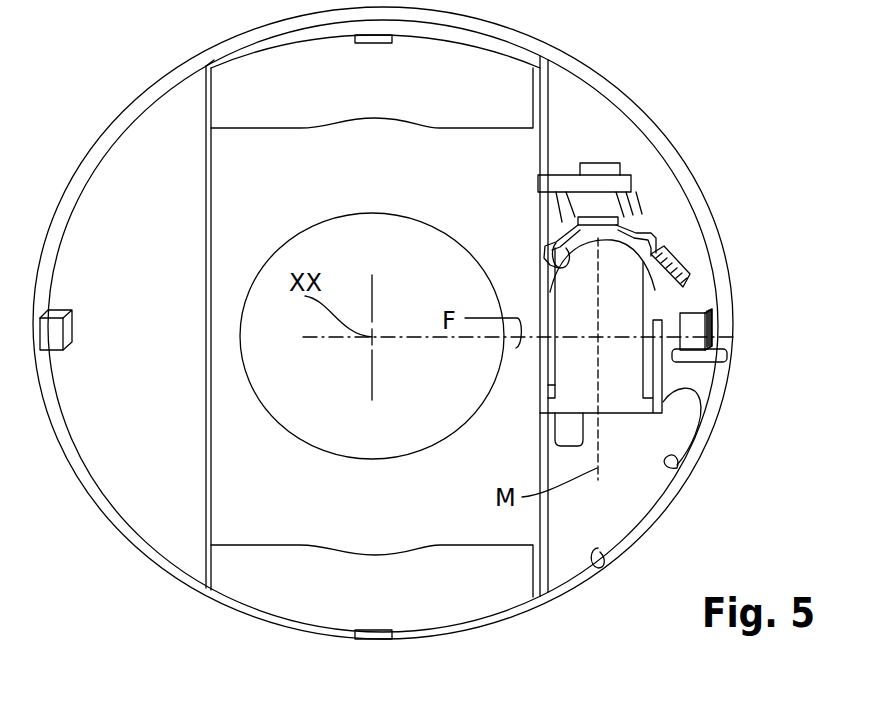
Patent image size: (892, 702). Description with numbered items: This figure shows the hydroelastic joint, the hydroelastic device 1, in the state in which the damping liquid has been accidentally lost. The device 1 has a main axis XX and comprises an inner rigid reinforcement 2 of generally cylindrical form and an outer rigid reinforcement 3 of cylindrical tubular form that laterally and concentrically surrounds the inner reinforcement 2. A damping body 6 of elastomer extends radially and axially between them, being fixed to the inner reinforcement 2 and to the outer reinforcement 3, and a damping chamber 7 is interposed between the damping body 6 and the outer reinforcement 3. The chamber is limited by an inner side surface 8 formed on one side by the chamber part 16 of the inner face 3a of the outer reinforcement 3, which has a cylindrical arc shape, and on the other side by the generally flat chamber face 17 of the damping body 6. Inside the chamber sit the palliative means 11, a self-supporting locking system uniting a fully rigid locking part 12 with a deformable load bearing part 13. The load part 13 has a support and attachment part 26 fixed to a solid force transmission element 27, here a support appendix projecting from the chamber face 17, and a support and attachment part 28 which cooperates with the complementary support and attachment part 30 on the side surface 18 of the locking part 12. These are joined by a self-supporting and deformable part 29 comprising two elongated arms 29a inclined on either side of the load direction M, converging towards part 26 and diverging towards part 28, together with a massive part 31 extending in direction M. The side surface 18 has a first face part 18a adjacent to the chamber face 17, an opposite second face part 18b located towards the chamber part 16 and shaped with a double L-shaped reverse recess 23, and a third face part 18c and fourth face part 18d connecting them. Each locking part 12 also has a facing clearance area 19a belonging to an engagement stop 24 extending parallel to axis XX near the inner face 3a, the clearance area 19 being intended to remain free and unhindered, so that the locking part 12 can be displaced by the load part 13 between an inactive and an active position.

The hydroelastic device 1 is at (684, 212).
The inner rigid reinforcement 2 is at (487, 346).
The outer rigid reinforcement 3 is at (731, 291).
The inner face of the outer reinforcement 3a is at (680, 470).
The damping body 6 is at (247, 158).
The damping chamber 7 is at (688, 250).
The inner side surface 8 is at (547, 115).
The palliative means 11 is at (705, 392).
The locking part 12 is at (625, 400).
The load bearing part 13 is at (647, 213).
The chamber part of the inner face of the outer reinforcement 16 is at (598, 553).
The chamber face of the damping body 17 is at (550, 522).
The side surface of the locking part 18 is at (700, 425).
The first face part 18a is at (545, 385).
The second face part 18b is at (677, 468).
The third face part 18c is at (650, 227).
The fourth face part 18d is at (580, 442).
The clearance area 19 is at (672, 388).
The facing clearance area 19a is at (700, 360).
The double L-shaped reverse recess 23 is at (560, 348).
The engagement stop 24 is at (714, 334).
The support and attachment part 26 is at (623, 217).
The solid force transmission element 27 is at (560, 180).
The support and attachment part of the locking part 28 is at (676, 262).
The self-supporting and deformable part 29 is at (660, 235).
The arms 29a is at (556, 290).
The support and attachment part 30 is at (670, 266).
The massive part 31 is at (588, 207).